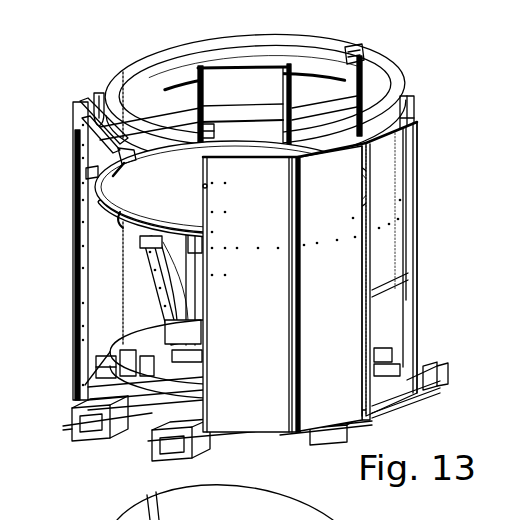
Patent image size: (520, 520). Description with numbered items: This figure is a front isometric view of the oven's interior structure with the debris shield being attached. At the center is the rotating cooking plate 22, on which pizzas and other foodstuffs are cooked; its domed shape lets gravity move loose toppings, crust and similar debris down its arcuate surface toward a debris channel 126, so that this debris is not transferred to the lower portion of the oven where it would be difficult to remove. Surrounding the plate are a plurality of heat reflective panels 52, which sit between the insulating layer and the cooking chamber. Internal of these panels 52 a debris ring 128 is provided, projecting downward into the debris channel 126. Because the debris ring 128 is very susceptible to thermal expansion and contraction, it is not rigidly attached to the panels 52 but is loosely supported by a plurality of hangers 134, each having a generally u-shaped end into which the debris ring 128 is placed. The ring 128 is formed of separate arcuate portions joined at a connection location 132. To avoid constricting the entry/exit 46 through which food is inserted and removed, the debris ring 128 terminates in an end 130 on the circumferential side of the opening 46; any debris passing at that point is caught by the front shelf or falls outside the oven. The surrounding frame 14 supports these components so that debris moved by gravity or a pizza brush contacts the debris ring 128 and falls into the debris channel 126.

The support frame 14 is at (80, 128).
The rotating cooking plate 22 is at (182, 206).
The entry/exit 46 is at (207, 188).
The heat reflective panels 52 is at (265, 319).
The debris channel 126 is at (118, 213).
The debris ring 128 is at (398, 92).
The end of debris ring 130 is at (97, 95).
The connection location 132 is at (204, 126).
The hangers 134 is at (100, 167).